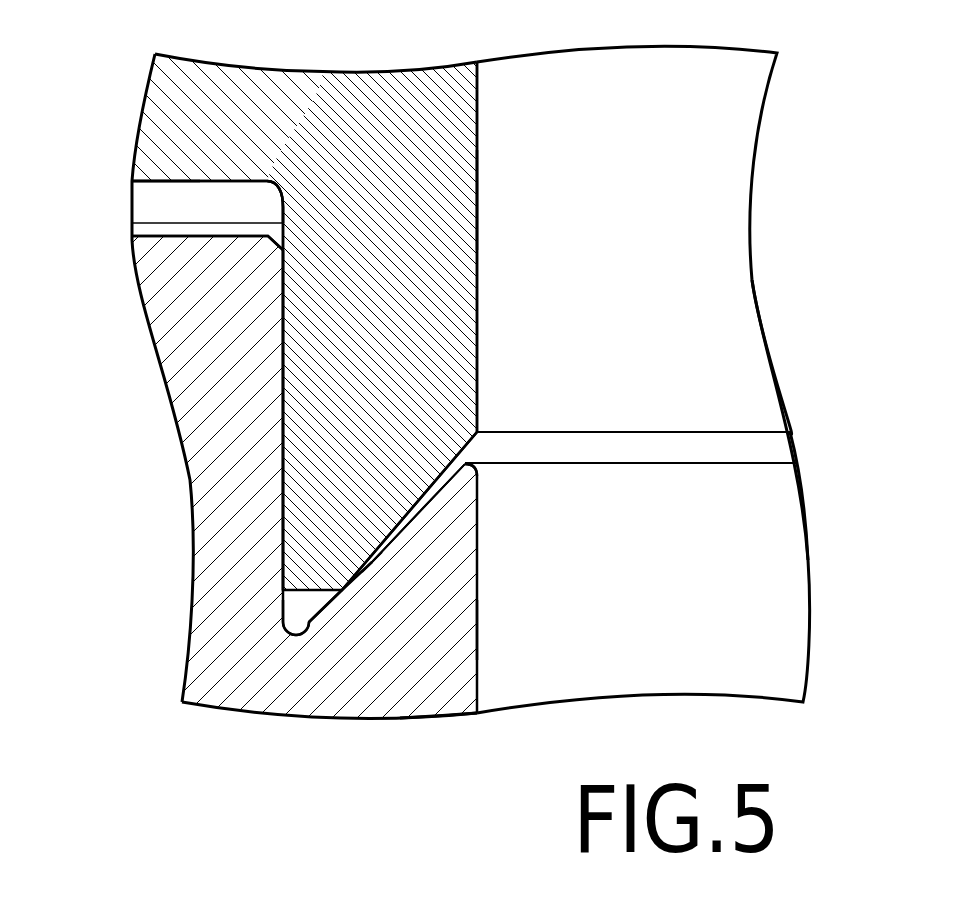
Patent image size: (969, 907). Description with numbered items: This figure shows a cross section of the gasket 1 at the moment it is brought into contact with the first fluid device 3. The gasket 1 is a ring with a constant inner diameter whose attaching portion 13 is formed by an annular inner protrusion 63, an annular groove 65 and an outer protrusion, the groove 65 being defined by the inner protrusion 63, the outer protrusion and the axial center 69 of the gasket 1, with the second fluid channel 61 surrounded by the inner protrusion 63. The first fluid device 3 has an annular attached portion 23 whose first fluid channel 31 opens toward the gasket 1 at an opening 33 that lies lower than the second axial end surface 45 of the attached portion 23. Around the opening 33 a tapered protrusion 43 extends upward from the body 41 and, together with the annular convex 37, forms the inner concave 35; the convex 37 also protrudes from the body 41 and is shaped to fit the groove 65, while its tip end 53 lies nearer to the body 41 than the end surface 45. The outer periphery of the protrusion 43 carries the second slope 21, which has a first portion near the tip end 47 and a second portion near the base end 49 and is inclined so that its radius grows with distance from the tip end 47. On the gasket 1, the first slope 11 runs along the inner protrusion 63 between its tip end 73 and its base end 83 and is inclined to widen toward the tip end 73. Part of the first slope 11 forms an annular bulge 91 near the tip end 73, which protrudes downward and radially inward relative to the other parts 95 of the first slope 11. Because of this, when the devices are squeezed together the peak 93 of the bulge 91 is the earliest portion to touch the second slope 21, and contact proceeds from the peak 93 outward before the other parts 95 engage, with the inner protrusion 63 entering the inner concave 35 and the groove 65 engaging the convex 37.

The gasket 1 is at (398, 142).
The first fluid device 3 is at (246, 677).
The first slope 11 is at (460, 474).
The attaching portion 13 is at (309, 529).
The second slope 21 is at (426, 491).
The attached portion 23 is at (790, 541).
The first fluid channel 31 is at (715, 619).
The opening 33 is at (721, 463).
The inner concave 35 is at (299, 620).
The convex 37 is at (143, 231).
The body 41 is at (458, 703).
The protrusion 43 is at (468, 565).
The second axial end surface 45 is at (263, 224).
The tip end 47 is at (452, 464).
The base end 49 is at (453, 637).
The tip end 53 is at (248, 232).
The second fluid channel 61 is at (647, 342).
The inner protrusion 63 is at (487, 320).
The groove 65 is at (132, 197).
The axial center 69 is at (203, 147).
The tip end 73 is at (309, 627).
The base end 83 is at (440, 178).
The bulge 91 is at (375, 571).
The peak 93 is at (370, 570).
The other parts 95 is at (452, 476).